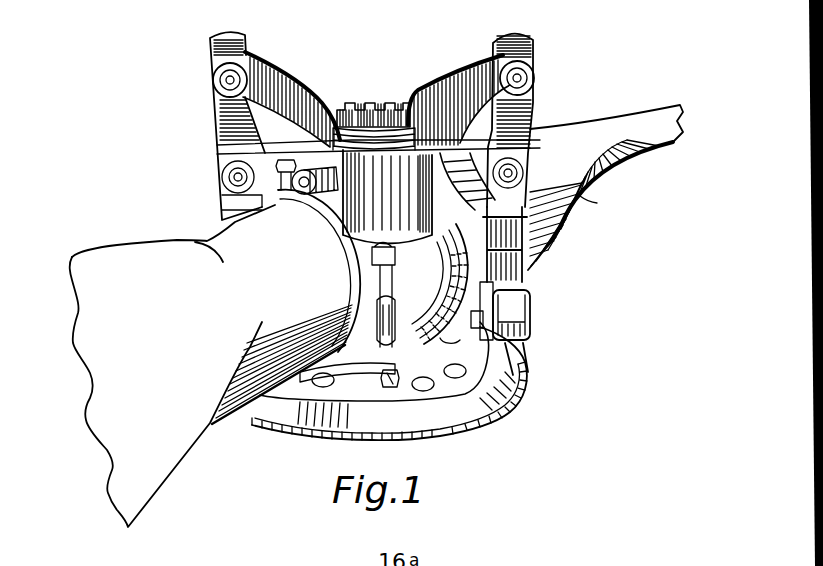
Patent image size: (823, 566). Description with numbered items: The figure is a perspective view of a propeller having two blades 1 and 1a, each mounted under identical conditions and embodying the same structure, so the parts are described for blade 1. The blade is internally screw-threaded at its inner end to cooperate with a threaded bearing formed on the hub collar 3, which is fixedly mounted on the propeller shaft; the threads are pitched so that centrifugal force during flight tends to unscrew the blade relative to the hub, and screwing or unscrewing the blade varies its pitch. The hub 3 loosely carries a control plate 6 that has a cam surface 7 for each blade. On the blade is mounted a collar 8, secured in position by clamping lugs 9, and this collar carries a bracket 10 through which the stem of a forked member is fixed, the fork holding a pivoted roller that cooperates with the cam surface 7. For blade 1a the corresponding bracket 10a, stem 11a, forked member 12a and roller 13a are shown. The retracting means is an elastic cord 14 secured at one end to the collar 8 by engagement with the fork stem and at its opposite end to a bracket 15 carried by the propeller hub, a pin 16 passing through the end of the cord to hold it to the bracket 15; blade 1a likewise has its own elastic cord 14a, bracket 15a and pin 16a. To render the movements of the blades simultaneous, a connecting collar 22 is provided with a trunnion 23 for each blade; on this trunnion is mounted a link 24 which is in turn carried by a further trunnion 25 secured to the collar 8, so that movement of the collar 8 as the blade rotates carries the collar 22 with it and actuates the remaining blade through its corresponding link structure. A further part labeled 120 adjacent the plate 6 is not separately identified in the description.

The propeller blade 1 is at (205, 250).
The second propeller blade 1a is at (550, 148).
The hub collar 3 is at (408, 98).
The control plate 6 is at (433, 430).
The cam surface 7 is at (462, 403).
The collar 8 is at (345, 227).
The clamping lugs 9 is at (367, 284).
The bracket 10 is at (221, 219).
The bracket base 10a is at (527, 232).
The blade edge 11a is at (590, 203).
The clamp block 12a is at (535, 298).
The clamp nut 13a is at (535, 328).
The elastic cord 14 is at (204, 120).
The bracket 14a is at (543, 95).
The bracket 15 is at (288, 80).
The link arm 15a is at (473, 83).
The pin 16 is at (223, 77).
The pivot pin 16a is at (520, 78).
The connecting collar 22 is at (378, 187).
The trunnion 23 is at (272, 147).
The link 24 is at (275, 193).
The trunnion 25 is at (300, 200).
The adjusting bolt 120 is at (358, 387).